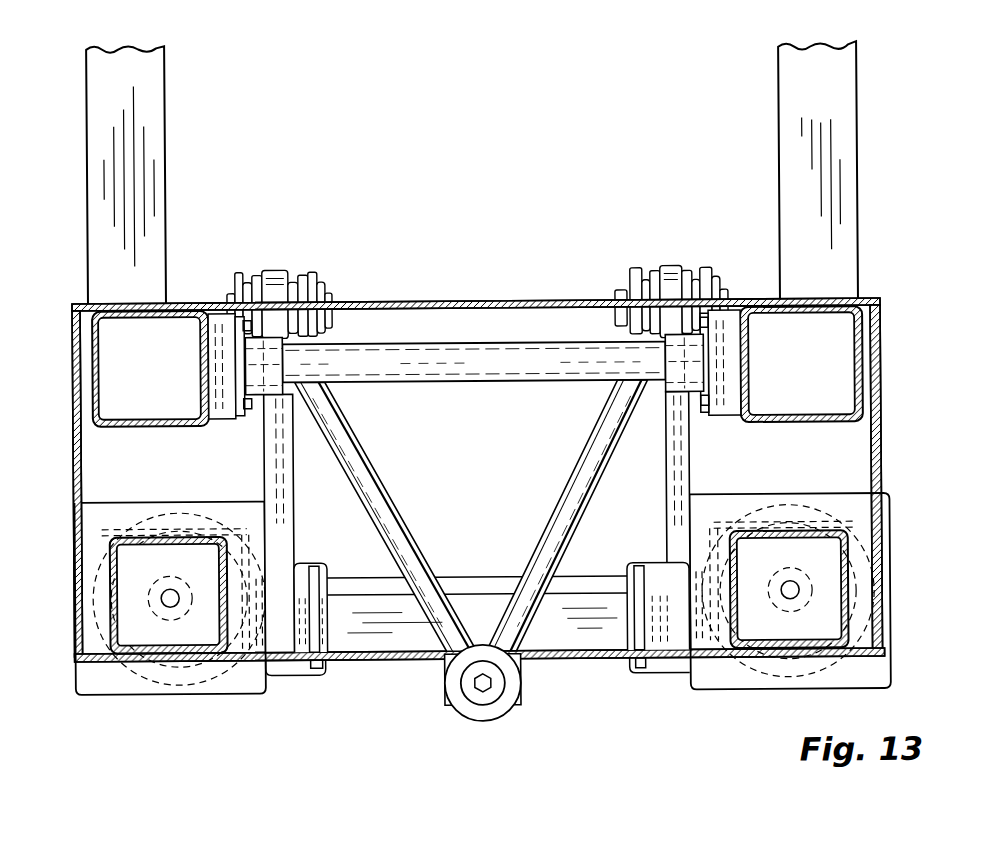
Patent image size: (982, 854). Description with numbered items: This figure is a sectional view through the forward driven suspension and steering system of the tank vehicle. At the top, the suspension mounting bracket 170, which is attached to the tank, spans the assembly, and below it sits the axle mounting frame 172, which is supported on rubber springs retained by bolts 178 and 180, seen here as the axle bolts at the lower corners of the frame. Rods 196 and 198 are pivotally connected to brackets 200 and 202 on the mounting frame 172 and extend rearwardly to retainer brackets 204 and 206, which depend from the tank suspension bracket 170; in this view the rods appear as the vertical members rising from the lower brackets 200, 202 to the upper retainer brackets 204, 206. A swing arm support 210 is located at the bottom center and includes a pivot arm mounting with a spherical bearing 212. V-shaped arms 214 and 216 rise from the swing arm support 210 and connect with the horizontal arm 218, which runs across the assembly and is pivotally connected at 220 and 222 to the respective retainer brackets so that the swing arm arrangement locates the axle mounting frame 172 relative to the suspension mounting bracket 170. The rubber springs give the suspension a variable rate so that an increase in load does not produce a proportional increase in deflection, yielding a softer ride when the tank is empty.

The suspension mounting bracket 170 is at (874, 351).
The axle mounting frame 172 is at (116, 565).
The bolt 178 is at (790, 595).
The bolt 180 is at (172, 601).
The rod 196 is at (689, 463).
The rod 198 is at (291, 505).
The bracket 200 is at (637, 676).
The bracket 202 is at (313, 674).
The retainer bracket 204 is at (802, 426).
The retainer bracket 206 is at (128, 430).
The swing arm support 210 is at (504, 733).
The spherical bearing 212 is at (452, 705).
The V-shaped arm 214 is at (587, 461).
The V-shaped arm 216 is at (380, 465).
The horizontal arm 218 is at (477, 386).
The pivot connection 220 is at (695, 362).
The pivot connection 222 is at (273, 362).